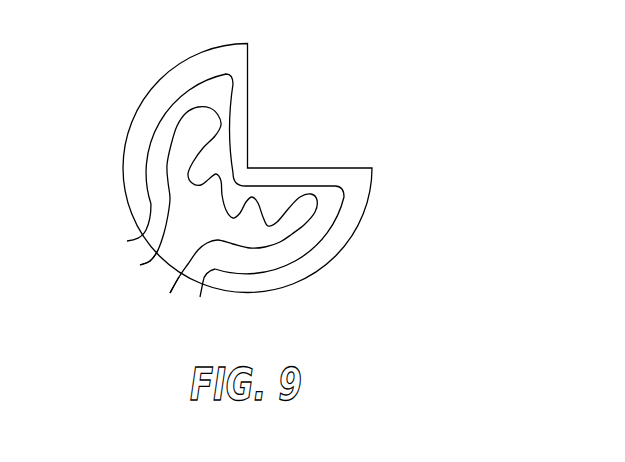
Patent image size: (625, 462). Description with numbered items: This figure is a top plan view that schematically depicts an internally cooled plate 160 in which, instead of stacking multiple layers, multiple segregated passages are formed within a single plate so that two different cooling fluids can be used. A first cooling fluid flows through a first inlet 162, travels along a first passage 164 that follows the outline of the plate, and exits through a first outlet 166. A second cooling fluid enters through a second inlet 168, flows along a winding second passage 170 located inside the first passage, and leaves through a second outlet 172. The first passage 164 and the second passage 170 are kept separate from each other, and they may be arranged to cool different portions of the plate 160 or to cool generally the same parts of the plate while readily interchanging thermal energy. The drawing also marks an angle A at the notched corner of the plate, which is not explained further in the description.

The internally cooled plate 160 is at (398, 250).
The first inlet 162 is at (127, 241).
The first passage 164 is at (236, 92).
The first outlet 166 is at (200, 298).
The second inlet 168 is at (143, 265).
The second passage 170 is at (177, 123).
The second outlet 172 is at (170, 292).
The angle A is at (250, 126).